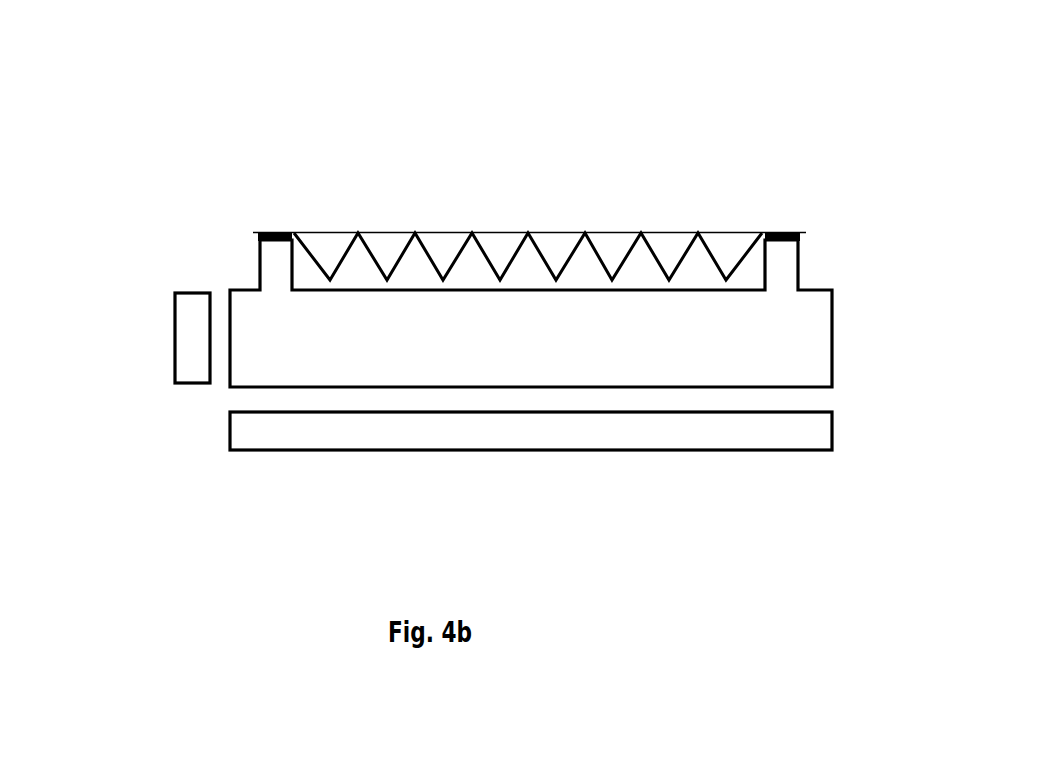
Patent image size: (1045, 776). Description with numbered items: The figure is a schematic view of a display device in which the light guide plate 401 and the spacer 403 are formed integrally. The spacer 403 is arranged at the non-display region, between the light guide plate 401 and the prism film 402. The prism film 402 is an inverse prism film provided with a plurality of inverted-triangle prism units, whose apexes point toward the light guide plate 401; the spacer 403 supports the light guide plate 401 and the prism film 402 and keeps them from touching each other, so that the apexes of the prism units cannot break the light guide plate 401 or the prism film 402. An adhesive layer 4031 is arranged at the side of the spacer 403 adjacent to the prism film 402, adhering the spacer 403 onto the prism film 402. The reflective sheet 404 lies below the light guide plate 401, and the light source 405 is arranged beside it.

The light guide plate 401 is at (265, 363).
The prism film 402 is at (328, 232).
The spacer 403 is at (787, 265).
The adhesive layer 4031 is at (787, 233).
The reflective sheet 404 is at (475, 433).
The light source 405 is at (188, 335).